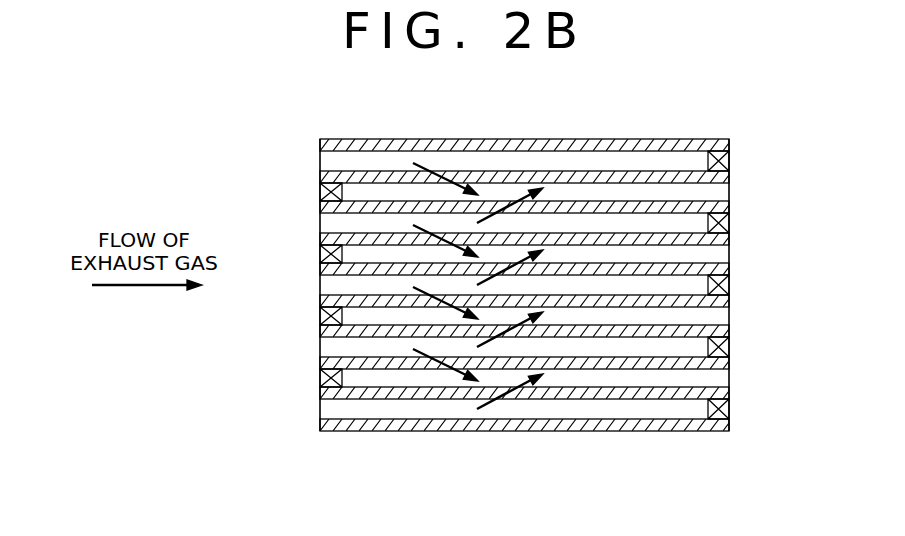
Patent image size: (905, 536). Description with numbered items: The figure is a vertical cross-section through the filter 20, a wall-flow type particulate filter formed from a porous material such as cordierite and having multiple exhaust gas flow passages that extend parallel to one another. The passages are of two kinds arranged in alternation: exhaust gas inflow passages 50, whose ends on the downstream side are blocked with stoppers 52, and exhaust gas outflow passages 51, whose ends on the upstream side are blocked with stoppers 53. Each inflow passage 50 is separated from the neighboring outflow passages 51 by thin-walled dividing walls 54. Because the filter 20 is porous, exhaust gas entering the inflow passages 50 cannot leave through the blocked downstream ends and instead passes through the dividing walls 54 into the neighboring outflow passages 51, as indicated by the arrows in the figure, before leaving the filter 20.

The filter 20 is at (544, 116).
The exhaust gas inflow passage 50 is at (688, 396).
The exhaust gas outflow passage 51 is at (375, 364).
The stopper 52 is at (729, 406).
The stopper 53 is at (333, 377).
The dividing wall 54 is at (590, 400).